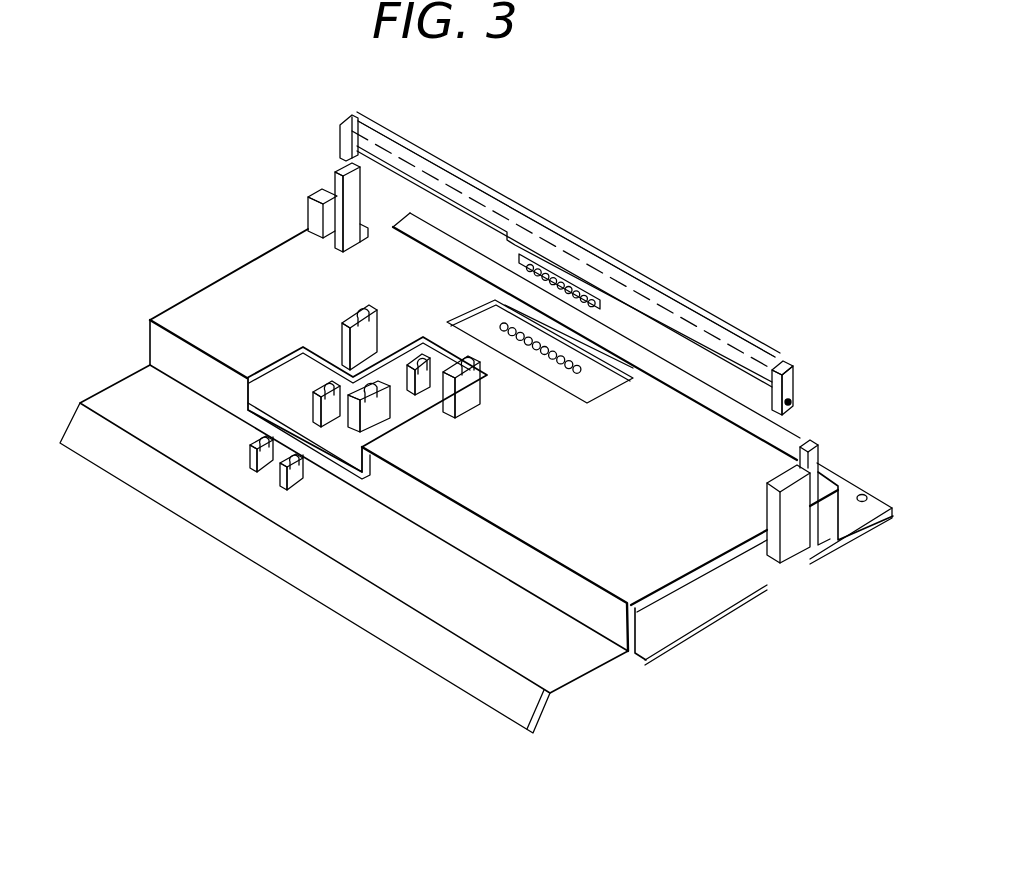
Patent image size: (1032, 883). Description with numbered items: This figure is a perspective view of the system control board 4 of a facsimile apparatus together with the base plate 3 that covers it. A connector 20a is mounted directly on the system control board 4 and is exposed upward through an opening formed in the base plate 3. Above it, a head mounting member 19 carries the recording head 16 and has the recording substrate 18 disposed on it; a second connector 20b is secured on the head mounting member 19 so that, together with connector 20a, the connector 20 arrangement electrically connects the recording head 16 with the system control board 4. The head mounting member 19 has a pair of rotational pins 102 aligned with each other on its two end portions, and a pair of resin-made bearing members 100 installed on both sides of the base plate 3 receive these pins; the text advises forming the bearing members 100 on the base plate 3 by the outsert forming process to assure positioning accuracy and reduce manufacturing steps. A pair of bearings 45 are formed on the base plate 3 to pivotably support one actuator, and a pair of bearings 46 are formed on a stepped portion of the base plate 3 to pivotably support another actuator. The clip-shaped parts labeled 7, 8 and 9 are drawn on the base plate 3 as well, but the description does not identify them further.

The base plate 3 is at (528, 528).
The system control board 4 is at (683, 640).
The clip 7 is at (383, 432).
The clip 8 is at (340, 430).
The clip 9 is at (423, 392).
The recording head 16 is at (452, 158).
The recording substrate 18 is at (787, 382).
The head mounting member 19 is at (657, 297).
The connector 20 is at (654, 297).
The connector 20a is at (600, 372).
The connector 20b is at (560, 262).
The bearings 45 is at (345, 330).
The bearings 46 is at (267, 467).
The bearing members 100 is at (305, 198).
The rotational pins 102 is at (340, 142).